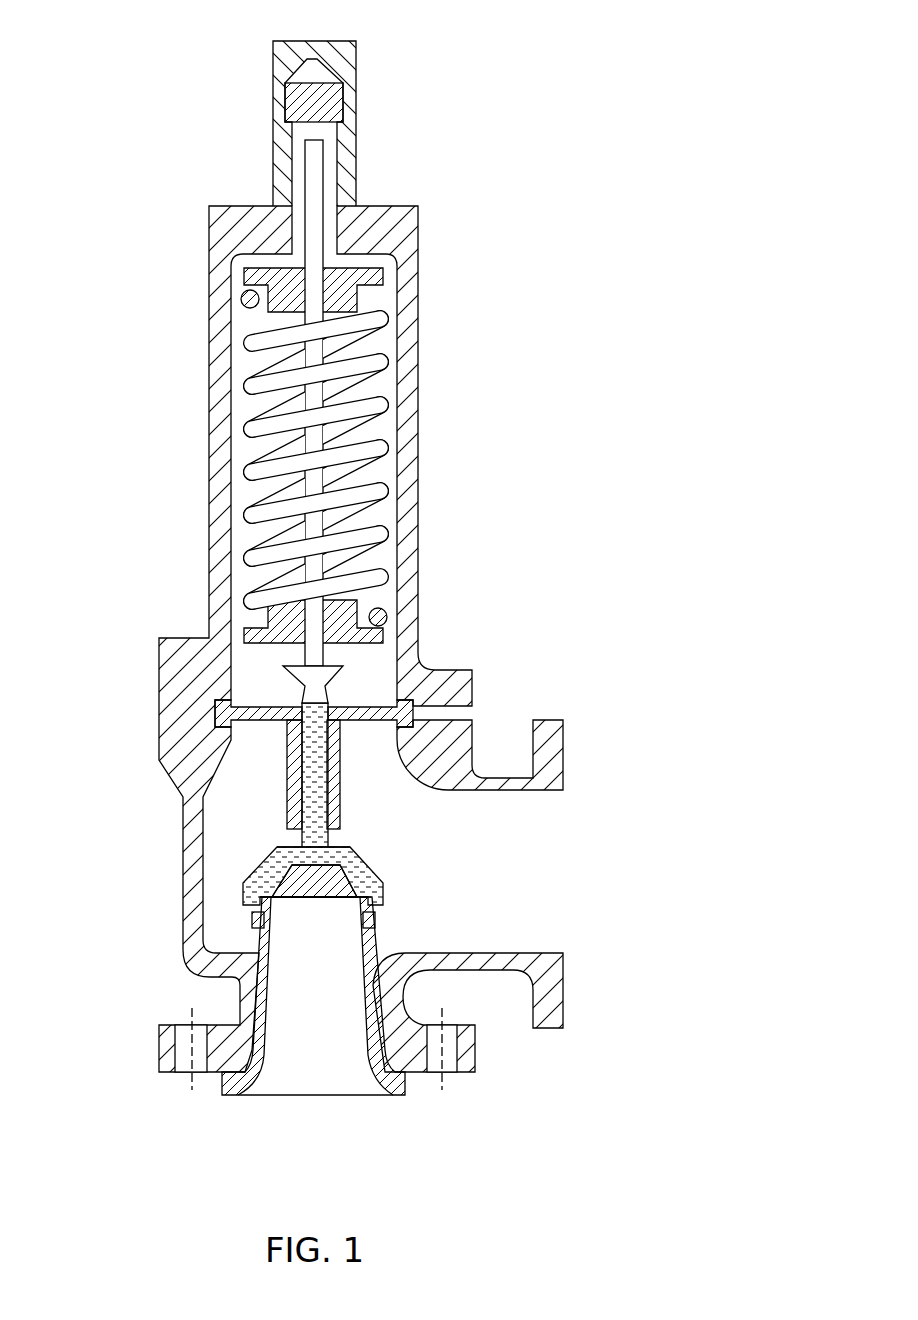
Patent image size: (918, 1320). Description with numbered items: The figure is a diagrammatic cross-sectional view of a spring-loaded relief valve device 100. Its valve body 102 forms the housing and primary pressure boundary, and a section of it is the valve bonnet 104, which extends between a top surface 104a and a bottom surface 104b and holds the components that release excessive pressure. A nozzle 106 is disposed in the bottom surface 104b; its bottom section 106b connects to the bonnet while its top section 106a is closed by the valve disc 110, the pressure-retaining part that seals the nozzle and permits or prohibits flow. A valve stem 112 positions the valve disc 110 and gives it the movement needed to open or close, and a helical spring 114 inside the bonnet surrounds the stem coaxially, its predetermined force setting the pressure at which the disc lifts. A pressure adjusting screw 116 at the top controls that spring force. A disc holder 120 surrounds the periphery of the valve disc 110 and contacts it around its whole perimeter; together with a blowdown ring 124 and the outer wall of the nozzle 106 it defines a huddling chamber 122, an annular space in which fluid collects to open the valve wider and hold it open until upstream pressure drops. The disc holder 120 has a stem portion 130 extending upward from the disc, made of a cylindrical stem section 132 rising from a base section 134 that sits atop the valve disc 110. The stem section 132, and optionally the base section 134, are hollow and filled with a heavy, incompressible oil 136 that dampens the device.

The relief valve device 100 is at (372, 591).
The valve body 102 is at (360, 148).
The valve bonnet 104 is at (361, 667).
The top surface 104a is at (397, 199).
The bottom surface 104b is at (417, 1082).
The nozzle 106 is at (298, 1036).
The top section 106a is at (313, 900).
The bottom section 106b is at (288, 1097).
The valve disc 110 is at (287, 883).
The valve stem 112 is at (313, 625).
The spring 114 is at (252, 343).
The pressure adjusting screw 116 is at (330, 77).
The disc holder 120 is at (266, 853).
The huddling chamber 122 is at (371, 900).
The blowdown ring 124 is at (253, 915).
The stem portion 130 is at (310, 749).
The stem section 132 is at (301, 810).
The base section 134 is at (318, 856).
The oil 136 is at (310, 770).